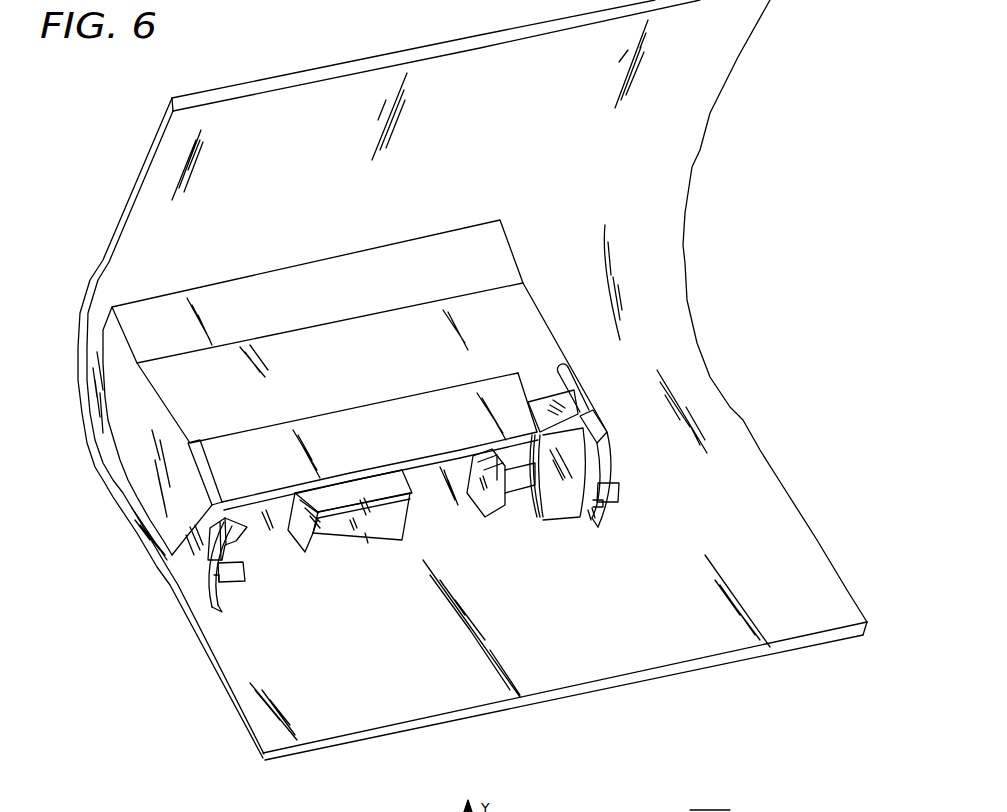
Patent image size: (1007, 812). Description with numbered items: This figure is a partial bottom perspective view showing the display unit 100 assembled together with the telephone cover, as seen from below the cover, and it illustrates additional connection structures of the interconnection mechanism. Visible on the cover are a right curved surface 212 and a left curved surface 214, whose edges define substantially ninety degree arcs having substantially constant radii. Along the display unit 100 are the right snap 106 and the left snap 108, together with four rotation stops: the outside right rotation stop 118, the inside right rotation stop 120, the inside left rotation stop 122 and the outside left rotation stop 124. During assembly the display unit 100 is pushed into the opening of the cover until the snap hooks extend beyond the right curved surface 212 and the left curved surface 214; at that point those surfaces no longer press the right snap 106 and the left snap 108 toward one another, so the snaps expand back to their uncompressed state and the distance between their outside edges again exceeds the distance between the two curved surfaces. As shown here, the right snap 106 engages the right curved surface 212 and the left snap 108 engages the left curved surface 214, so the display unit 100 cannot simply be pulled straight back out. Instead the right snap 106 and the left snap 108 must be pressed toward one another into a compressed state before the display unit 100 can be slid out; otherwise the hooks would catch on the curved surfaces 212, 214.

The display unit 100 is at (704, 806).
The right snap 106 is at (220, 572).
The left snap 108 is at (622, 490).
The outside right rotation stop 118 is at (234, 542).
The inside right rotation stop 120 is at (313, 532).
The inside left rotation stop 122 is at (503, 497).
The outside left rotation stop 124 is at (540, 512).
The right curved surface 212 is at (222, 602).
The left curved surface 214 is at (592, 518).